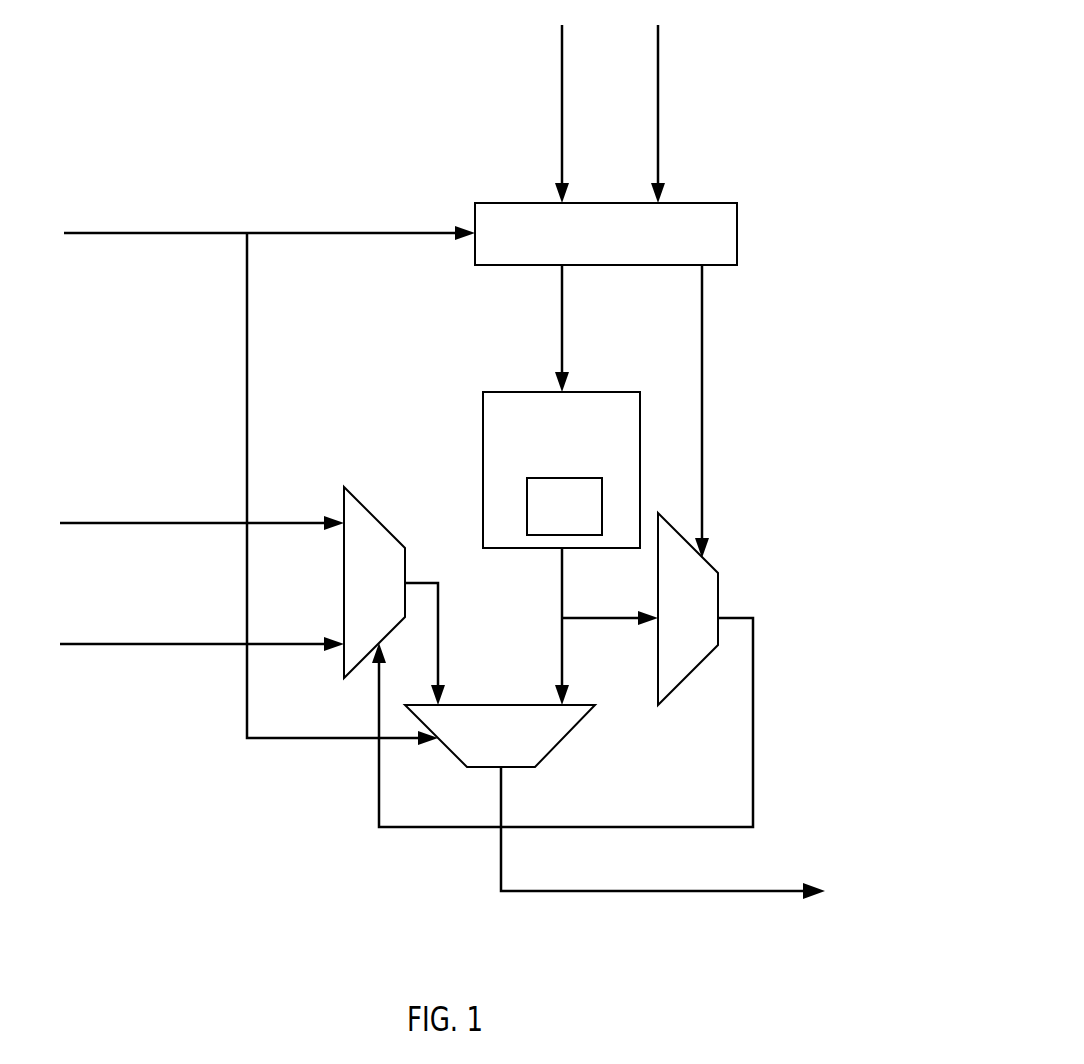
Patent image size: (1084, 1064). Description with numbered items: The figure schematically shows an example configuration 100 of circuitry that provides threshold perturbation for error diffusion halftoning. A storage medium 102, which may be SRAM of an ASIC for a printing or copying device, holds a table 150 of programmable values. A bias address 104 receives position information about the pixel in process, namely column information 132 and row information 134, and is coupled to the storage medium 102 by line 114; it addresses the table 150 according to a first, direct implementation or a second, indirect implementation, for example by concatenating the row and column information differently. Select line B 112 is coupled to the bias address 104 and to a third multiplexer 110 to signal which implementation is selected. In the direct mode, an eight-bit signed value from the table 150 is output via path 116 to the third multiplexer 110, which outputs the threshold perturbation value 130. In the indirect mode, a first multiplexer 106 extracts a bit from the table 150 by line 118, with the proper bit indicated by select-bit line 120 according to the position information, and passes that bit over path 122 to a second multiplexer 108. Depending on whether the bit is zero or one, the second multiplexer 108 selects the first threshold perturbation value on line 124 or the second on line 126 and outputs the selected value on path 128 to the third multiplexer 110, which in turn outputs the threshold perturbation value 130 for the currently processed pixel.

The configuration 100 is at (835, 112).
The storage medium 102 is at (542, 470).
The bias address 104 is at (587, 259).
The first multiplexer 106 is at (715, 586).
The second multiplexer 108 is at (401, 570).
The third multiplexer 110 is at (481, 759).
The select line B 112 is at (223, 232).
The line 114 is at (561, 312).
The path 116 is at (561, 662).
The line 118 is at (580, 616).
The select-bit line 120 is at (701, 344).
The path 122 is at (378, 808).
The line 124 is at (222, 520).
The line 126 is at (222, 641).
The path 128 is at (440, 620).
The threshold perturbation value 130 is at (666, 890).
The column information 132 is at (561, 52).
The row information 134 is at (657, 52).
The table of programmable values 150 is at (545, 519).